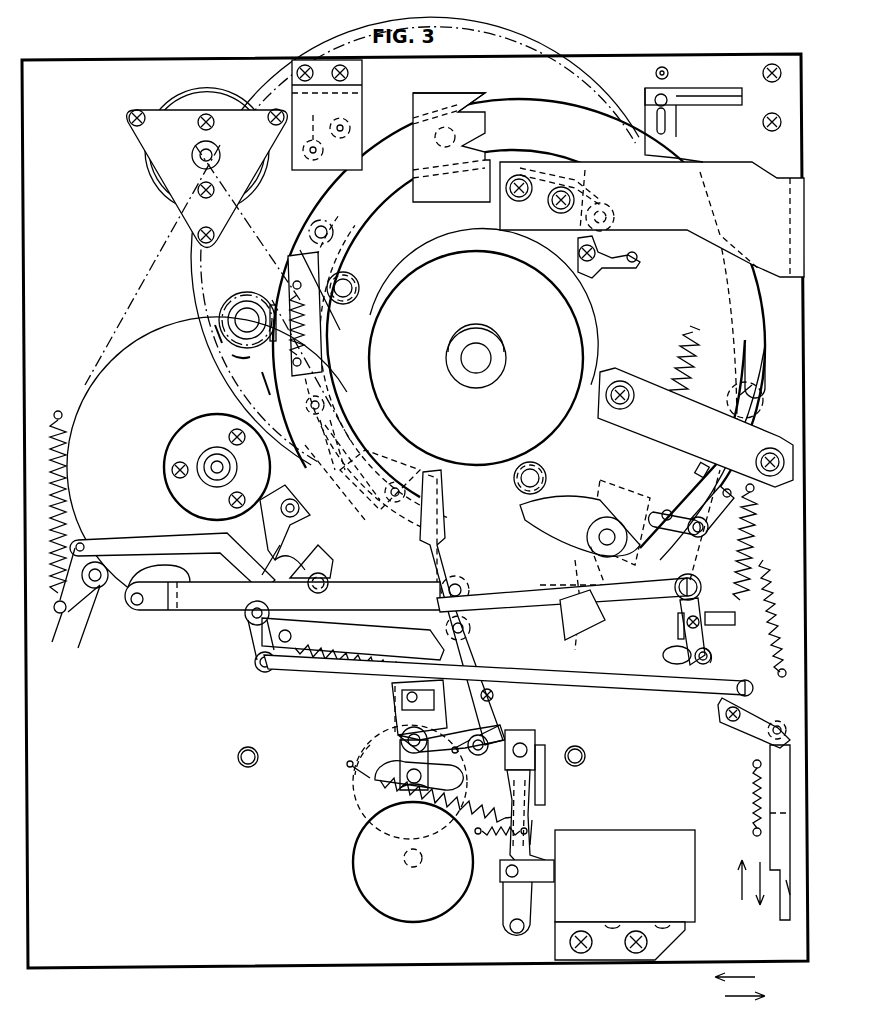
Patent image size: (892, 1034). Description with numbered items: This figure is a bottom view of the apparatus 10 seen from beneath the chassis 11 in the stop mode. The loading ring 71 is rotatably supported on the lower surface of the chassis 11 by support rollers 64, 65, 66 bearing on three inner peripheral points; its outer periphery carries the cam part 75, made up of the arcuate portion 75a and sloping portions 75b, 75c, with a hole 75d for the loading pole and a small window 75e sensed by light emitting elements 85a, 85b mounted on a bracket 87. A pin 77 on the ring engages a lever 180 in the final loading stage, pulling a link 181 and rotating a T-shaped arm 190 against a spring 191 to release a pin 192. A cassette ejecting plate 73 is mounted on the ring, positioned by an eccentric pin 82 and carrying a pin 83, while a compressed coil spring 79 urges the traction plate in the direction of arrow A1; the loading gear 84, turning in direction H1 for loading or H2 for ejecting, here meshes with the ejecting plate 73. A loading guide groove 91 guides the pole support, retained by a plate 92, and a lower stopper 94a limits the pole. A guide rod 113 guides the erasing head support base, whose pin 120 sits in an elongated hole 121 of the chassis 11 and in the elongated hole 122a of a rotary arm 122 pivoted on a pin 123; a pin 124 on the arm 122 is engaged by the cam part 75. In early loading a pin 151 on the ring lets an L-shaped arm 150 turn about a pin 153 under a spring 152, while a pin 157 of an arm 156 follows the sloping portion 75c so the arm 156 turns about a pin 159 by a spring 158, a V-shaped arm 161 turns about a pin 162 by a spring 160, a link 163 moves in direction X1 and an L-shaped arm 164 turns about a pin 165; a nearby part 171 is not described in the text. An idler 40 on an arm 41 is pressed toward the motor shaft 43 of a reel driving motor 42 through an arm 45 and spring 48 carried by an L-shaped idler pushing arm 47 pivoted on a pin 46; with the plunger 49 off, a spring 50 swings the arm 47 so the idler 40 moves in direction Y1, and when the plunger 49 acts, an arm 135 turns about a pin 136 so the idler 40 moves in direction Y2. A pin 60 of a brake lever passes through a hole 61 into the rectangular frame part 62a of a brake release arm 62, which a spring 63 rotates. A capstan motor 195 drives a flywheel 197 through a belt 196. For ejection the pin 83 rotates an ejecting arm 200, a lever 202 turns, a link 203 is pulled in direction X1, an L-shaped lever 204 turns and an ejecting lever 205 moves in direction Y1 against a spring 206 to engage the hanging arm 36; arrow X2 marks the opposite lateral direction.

The apparatus 10 is at (180, 43).
The chassis 11 is at (232, 62).
The hanging arm 36 is at (785, 905).
The idler 40 is at (355, 822).
The arm 41 is at (400, 750).
The reel driving motor 42 is at (354, 876).
The motor shaft 43 is at (406, 866).
The arm 45 is at (472, 762).
The pin 46 is at (527, 750).
The L-shaped idler pushing arm 47 is at (532, 790).
The spring 48 is at (482, 748).
The plunger 49 is at (630, 830).
The spring 50 is at (372, 787).
The pin 60 is at (392, 690).
The hole 61 is at (395, 705).
The L-shaped brake release arm 62 is at (498, 735).
The rectangular frame part 62a is at (372, 745).
The spring 63 is at (480, 835).
The support roller 64 is at (350, 278).
The support roller 65 is at (542, 470).
The support roller 66 is at (600, 205).
The loading ring 71 is at (560, 118).
The cassette ejecting plate 73 is at (325, 345).
The cam part 75 is at (650, 555).
The arcuate portion 75a is at (530, 612).
The sloping portion 75b is at (745, 360).
The sloping portion 75c is at (355, 535).
The hole 75d is at (545, 582).
The window 75e is at (697, 466).
The pin 77 is at (440, 142).
The coil spring 79 is at (672, 348).
The eccentric pin 82 is at (424, 527).
The pin 83 is at (388, 470).
The loading gear 84 is at (240, 305).
The light emitting element 85a is at (327, 115).
The light emitting element 85b is at (348, 125).
The bracket 87 is at (292, 100).
The loading guide groove 91 is at (545, 565).
The plate 92 is at (615, 600).
The lower stopper 94a is at (480, 93).
The guide rod 113 is at (700, 92).
The pin 120 is at (656, 96).
The elongated hole 121 is at (722, 106).
The rotary arm 122 is at (762, 305).
The elongated hole 122a is at (668, 118).
The pin 123 is at (755, 400).
The pin 124 is at (690, 244).
The arm 135 is at (503, 910).
The pin 136 is at (506, 933).
The L-shaped arm 150 is at (675, 535).
The pin 151 is at (667, 510).
The spring 152 is at (762, 597).
The pin 153 is at (703, 537).
The arm 156 is at (410, 645).
The pin 157 is at (330, 580).
The spring 158 is at (338, 665).
The pin 159 is at (462, 640).
The spring 160 is at (66, 495).
The V-shaped arm 161 is at (335, 545).
The pin 162 is at (300, 508).
The link 163 is at (140, 537).
The L-shaped arm 164 is at (66, 615).
The pin 165 is at (100, 588).
The spring 171 is at (322, 650).
The lever 180 is at (452, 520).
The link 181 is at (215, 610).
The T-shaped arm 190 is at (696, 610).
The spring 191 is at (735, 600).
The pin 192 is at (711, 658).
The capstan motor 195 is at (141, 160).
The belt 196 is at (148, 255).
The flywheel 197 is at (167, 325).
The ejecting arm 200 is at (272, 464).
The lever 202 is at (255, 655).
The link 203 is at (618, 688).
The L-shaped lever 204 is at (752, 730).
The ejecting lever 205 is at (755, 782).
The spring 206 is at (753, 808).
The arrow H1 is at (243, 368).
The arrow H2 is at (206, 333).
The arrow A1 is at (255, 388).
The arrow X1 is at (749, 977).
The arrow X2 is at (734, 996).
The arrow Y1 is at (744, 866).
The arrow Y2 is at (761, 895).